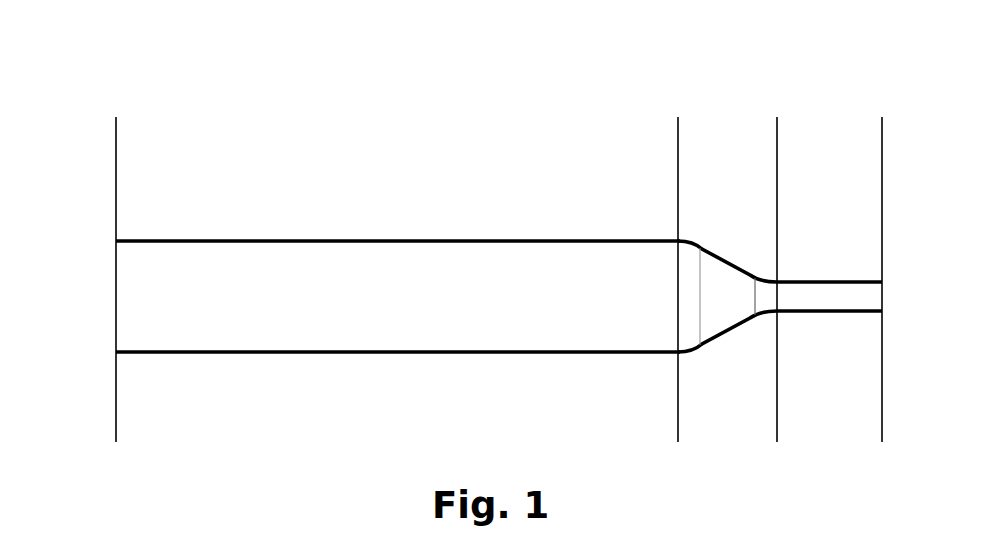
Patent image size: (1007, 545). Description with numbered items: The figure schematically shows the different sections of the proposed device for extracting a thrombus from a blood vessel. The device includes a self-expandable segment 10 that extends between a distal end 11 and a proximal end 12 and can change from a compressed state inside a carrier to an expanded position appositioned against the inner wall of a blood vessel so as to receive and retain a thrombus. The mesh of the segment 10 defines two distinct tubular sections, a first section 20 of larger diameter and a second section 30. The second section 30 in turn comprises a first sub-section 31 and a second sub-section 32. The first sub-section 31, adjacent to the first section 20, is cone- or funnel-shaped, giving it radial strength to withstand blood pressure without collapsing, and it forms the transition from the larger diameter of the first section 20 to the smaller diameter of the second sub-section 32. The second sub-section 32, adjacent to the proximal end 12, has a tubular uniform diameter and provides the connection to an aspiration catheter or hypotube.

The segment 10 is at (86, 137).
The distal end 11 is at (116, 272).
The proximal end 12 is at (885, 294).
The first section 20 is at (678, 146).
The second section 30 is at (886, 100).
The first sub-section 31 is at (777, 146).
The second sub-section 32 is at (882, 146).